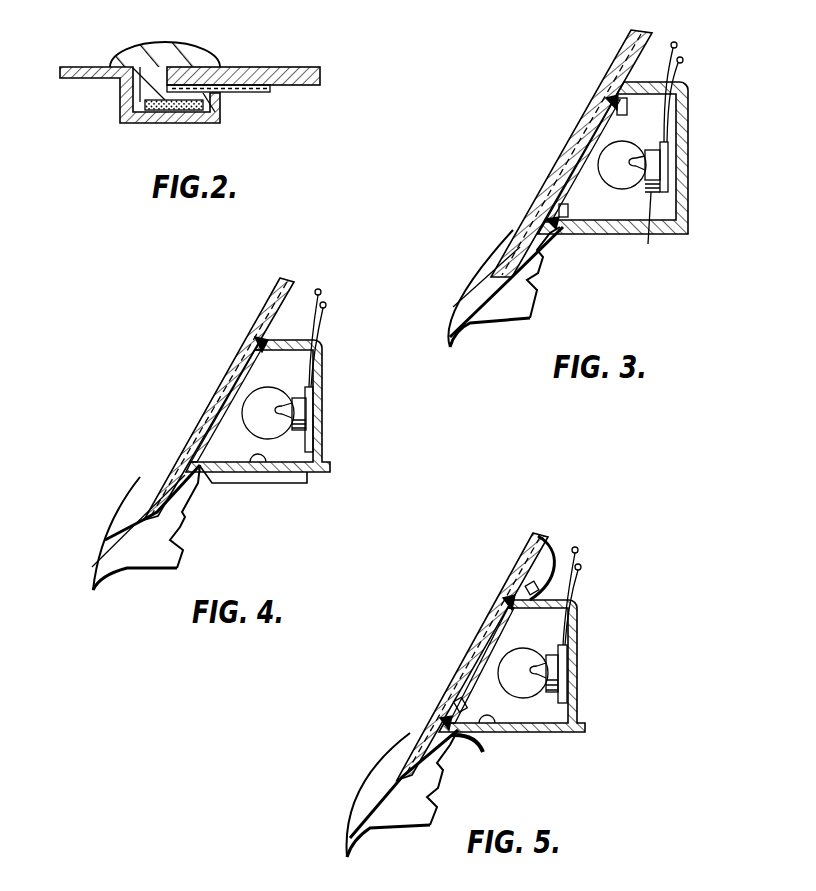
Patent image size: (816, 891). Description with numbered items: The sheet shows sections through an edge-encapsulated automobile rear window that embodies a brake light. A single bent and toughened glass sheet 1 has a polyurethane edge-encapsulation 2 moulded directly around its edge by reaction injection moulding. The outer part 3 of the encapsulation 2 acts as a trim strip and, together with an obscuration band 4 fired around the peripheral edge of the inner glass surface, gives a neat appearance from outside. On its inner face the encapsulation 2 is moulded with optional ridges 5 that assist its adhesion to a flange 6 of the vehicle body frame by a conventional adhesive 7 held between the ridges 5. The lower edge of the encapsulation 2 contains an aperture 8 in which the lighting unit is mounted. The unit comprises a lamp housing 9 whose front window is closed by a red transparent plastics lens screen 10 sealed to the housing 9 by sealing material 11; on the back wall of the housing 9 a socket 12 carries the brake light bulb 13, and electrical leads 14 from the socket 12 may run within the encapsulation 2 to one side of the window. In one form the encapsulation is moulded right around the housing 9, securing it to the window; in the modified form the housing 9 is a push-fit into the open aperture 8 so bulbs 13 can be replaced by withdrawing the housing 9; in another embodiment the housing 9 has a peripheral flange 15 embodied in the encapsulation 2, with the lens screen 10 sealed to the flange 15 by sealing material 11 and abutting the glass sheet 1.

In FIG. 2, the sheet of glass 1 is at (296, 82).
In FIG. 3, the sheet of glass 1 is at (621, 72).
In FIG. 4, the sheet of glass 1 is at (271, 306).
In FIG. 5, the sheet of glass 1 is at (526, 561).
In FIG. 2, the edge-encapsulation 2 is at (162, 58).
In FIG. 3, the edge-encapsulation 2 is at (488, 282).
In FIG. 4, the edge-encapsulation 2 is at (128, 502).
In FIG. 5, the edge-encapsulation 2 is at (378, 792).
In FIG. 2, the outer part of the moulded encapsulation 3 is at (148, 50).
In FIG. 2, the obscuration band 4 is at (250, 92).
In FIG. 2, the ridges 5 is at (128, 120).
In FIG. 4, the ridges 5 is at (182, 562).
In FIG. 2, the flange of the vehicle body frame 6 is at (188, 112).
In FIG. 2, the adhesive 7 is at (167, 122).
In FIG. 4, the aperture 8 is at (262, 472).
In FIG. 5, the aperture 8 is at (498, 732).
In FIG. 3, the lamp housing 9 is at (673, 125).
In FIG. 4, the lamp housing 9 is at (314, 370).
In FIG. 5, the lamp housing 9 is at (578, 673).
In FIG. 3, the lens screen 10 is at (565, 168).
In FIG. 4, the lens screen 10 is at (233, 384).
In FIG. 5, the lens screen 10 is at (479, 656).
In FIG. 3, the sealing material 11 is at (608, 102).
In FIG. 5, the sealing material 11 is at (511, 600).
In FIG. 3, the socket 12 is at (647, 231).
In FIG. 3, the brake light bulb 13 is at (613, 149).
In FIG. 4, the brake light bulb 13 is at (257, 424).
In FIG. 5, the brake light bulb 13 is at (508, 676).
In FIG. 3, the electrical leads 14 is at (661, 82).
In FIG. 4, the electrical leads 14 is at (307, 340).
In FIG. 5, the electrical leads 14 is at (573, 582).
In FIG. 5, the peripheral flange 15 is at (551, 570).